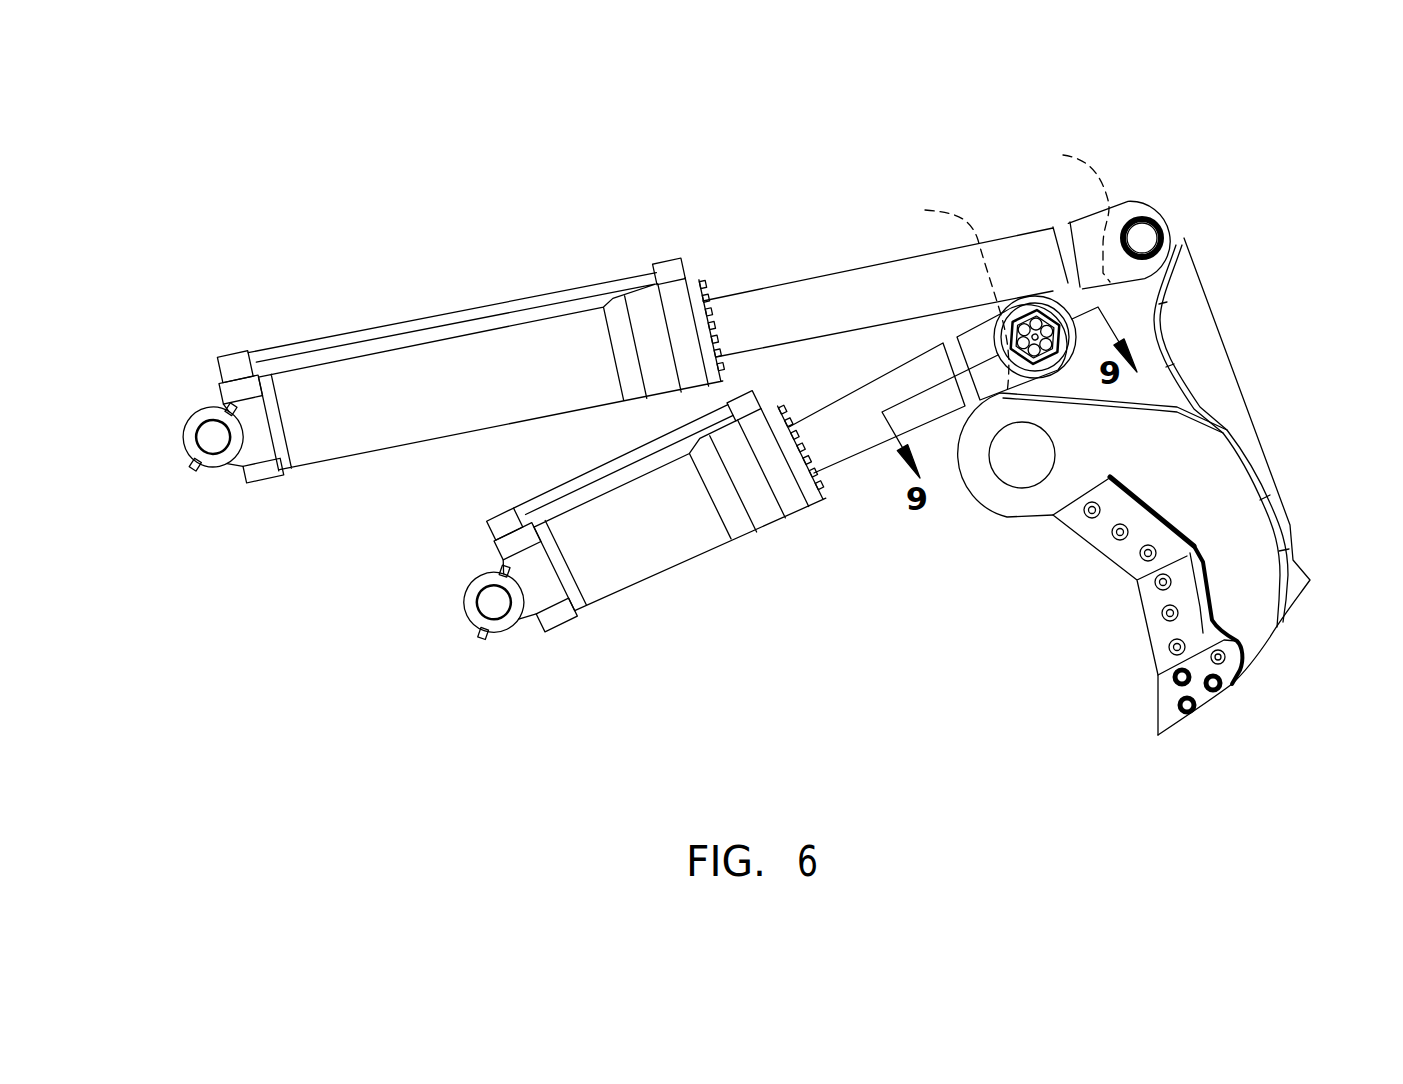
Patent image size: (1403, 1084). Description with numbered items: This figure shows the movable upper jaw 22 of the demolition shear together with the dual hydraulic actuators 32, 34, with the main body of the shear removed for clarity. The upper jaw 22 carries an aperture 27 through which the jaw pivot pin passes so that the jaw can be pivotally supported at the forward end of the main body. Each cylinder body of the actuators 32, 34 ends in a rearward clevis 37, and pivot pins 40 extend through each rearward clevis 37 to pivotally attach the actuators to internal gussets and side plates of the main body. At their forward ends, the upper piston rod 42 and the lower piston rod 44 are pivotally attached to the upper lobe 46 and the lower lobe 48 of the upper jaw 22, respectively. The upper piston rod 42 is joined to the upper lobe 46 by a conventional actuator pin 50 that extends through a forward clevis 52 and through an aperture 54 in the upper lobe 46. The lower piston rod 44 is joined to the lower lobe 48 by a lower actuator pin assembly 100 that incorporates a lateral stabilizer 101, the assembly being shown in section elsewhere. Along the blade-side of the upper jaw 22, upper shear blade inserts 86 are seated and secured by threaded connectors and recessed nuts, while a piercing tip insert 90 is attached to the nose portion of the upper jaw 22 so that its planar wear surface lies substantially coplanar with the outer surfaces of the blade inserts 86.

The movable upper jaw 22 is at (1176, 488).
The aperture 27 is at (1022, 463).
The hydraulic actuator 32 is at (408, 445).
The hydraulic actuator 34 is at (662, 579).
The rearward clevis 37 is at (210, 468).
The pivot pin 40 is at (204, 436).
The upper piston rod 42 is at (843, 290).
The lower piston rod 44 is at (837, 448).
The upper lobe 46 is at (1066, 211).
The lower lobe 48 is at (946, 294).
The actuator pin 50 is at (1150, 236).
The forward clevis 52 is at (1173, 238).
The aperture 54 is at (1143, 222).
The upper shear blade inserts 86 is at (1168, 628).
The piercing tip insert 90 is at (1167, 708).
The actuator pin assembly 100 is at (1100, 310).
The lateral stabilizer 101 is at (1018, 327).